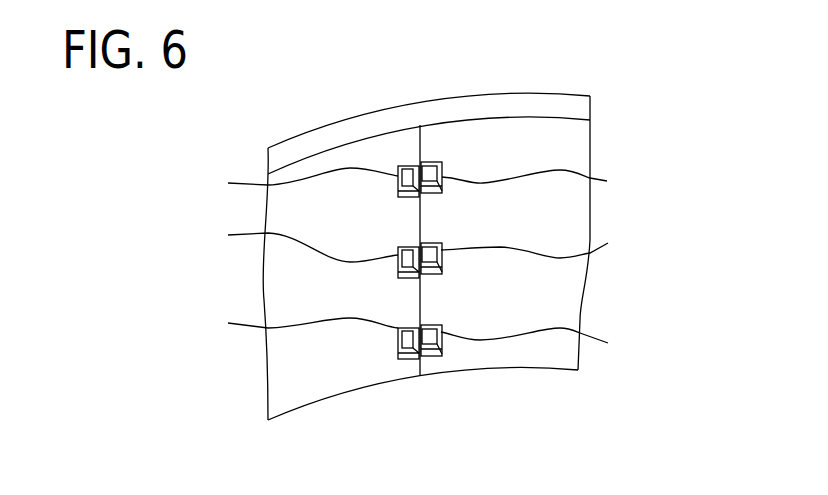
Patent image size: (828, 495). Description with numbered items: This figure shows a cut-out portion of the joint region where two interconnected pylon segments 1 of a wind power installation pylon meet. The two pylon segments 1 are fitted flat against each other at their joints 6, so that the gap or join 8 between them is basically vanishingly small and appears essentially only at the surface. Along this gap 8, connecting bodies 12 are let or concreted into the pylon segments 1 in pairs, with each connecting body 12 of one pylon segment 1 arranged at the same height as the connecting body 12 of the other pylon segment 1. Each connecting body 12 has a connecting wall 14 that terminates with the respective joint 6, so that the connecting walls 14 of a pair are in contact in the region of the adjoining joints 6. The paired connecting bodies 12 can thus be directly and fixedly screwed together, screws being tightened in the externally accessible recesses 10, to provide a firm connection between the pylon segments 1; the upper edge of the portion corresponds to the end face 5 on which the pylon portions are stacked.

The pylon segment 1 is at (532, 228).
The end face 5 is at (573, 108).
The joint 6 is at (415, 153).
The gap or join 8 is at (420, 125).
The recess 10 is at (418, 263).
The connecting body 12 is at (402, 363).
The connecting wall 14 is at (398, 167).